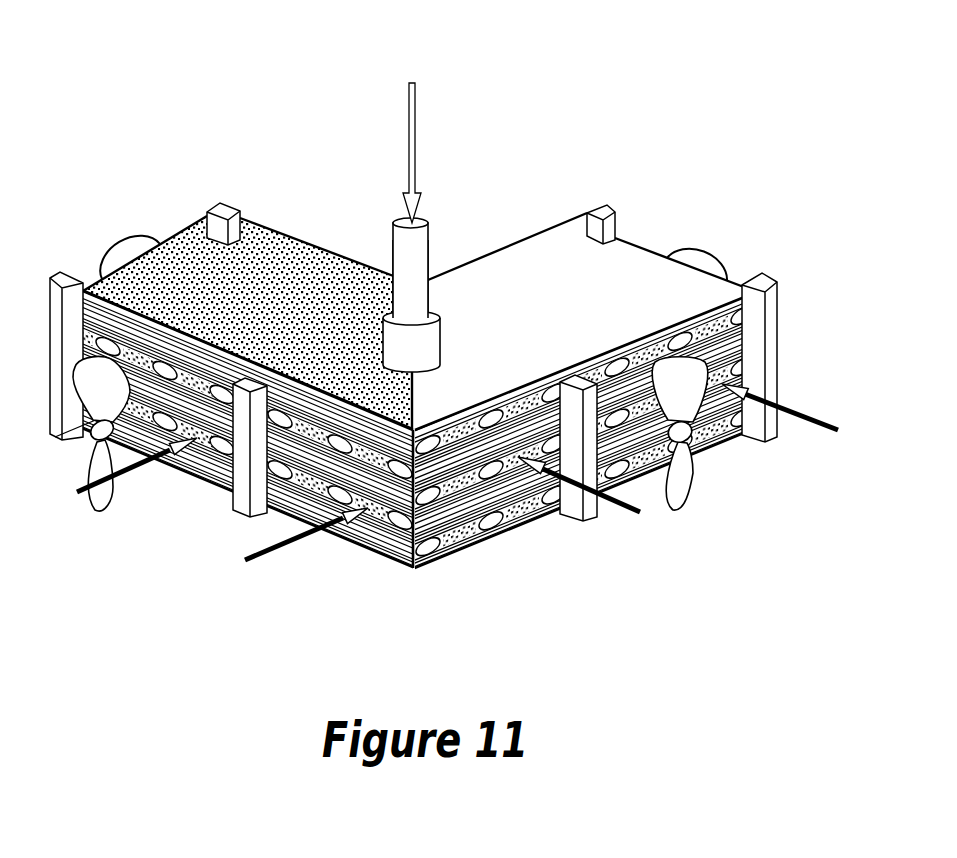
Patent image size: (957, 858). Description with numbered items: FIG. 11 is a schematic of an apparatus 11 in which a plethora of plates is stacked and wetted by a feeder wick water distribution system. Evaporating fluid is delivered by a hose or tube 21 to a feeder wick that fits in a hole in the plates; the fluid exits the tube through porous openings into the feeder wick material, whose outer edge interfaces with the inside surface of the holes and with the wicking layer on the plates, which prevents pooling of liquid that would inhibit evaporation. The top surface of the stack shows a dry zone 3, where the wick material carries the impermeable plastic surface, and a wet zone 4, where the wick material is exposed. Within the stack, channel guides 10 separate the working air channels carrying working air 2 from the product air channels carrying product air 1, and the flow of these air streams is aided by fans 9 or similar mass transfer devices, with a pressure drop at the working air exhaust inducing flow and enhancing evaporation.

The product air 1 is at (93, 502).
The working air 2 is at (290, 527).
The dry zone 3 is at (205, 293).
The wet zone 4 is at (597, 297).
The fan 9 is at (720, 520).
The channel guides 10 is at (460, 510).
The heat exchanger unit 11 is at (600, 166).
The water supply pipe 21 is at (417, 347).